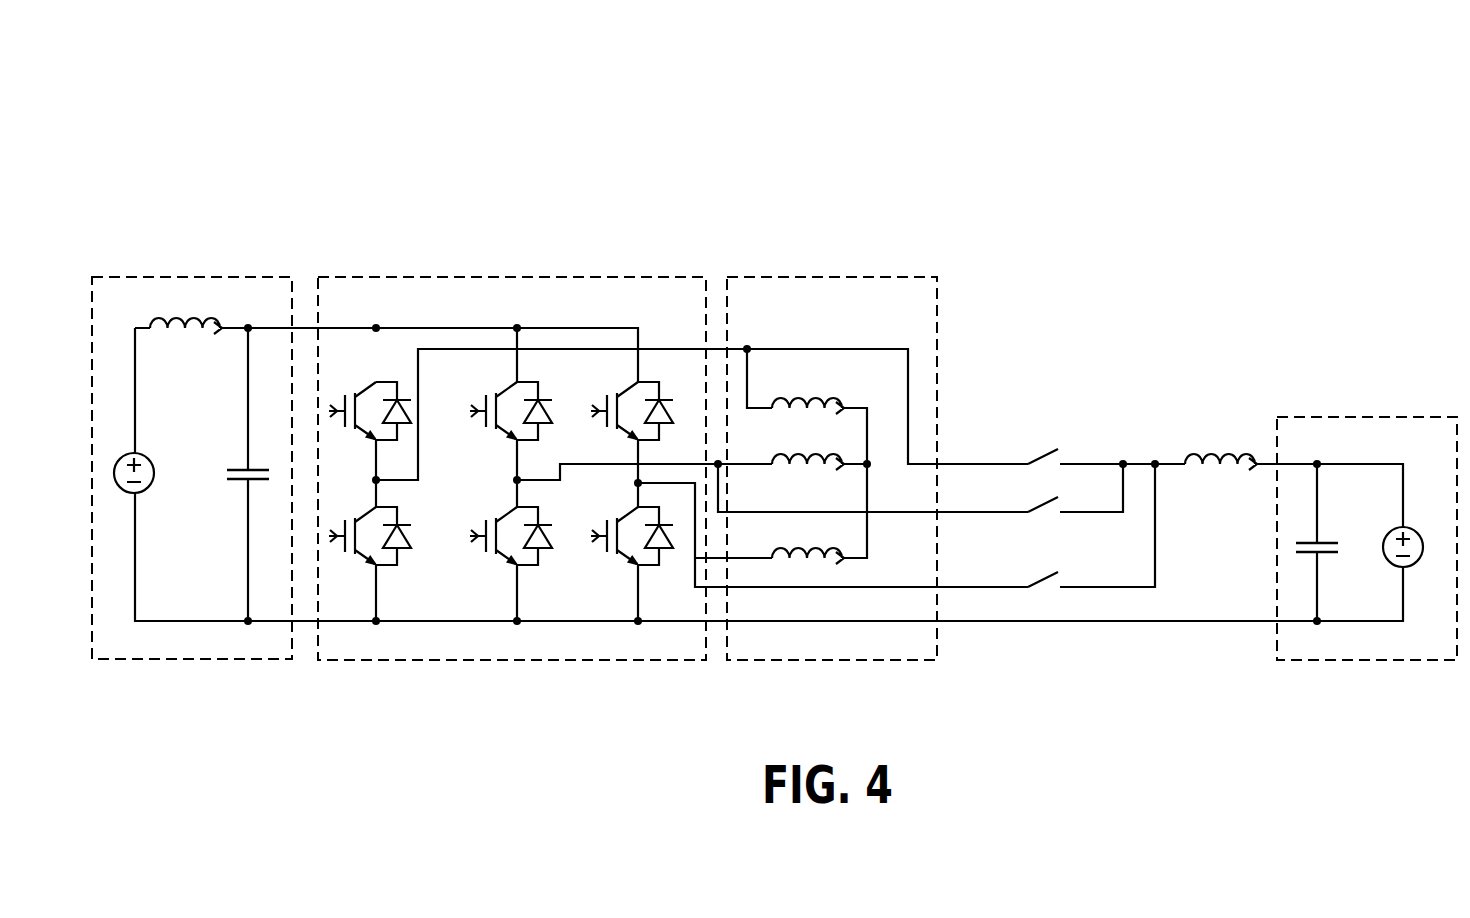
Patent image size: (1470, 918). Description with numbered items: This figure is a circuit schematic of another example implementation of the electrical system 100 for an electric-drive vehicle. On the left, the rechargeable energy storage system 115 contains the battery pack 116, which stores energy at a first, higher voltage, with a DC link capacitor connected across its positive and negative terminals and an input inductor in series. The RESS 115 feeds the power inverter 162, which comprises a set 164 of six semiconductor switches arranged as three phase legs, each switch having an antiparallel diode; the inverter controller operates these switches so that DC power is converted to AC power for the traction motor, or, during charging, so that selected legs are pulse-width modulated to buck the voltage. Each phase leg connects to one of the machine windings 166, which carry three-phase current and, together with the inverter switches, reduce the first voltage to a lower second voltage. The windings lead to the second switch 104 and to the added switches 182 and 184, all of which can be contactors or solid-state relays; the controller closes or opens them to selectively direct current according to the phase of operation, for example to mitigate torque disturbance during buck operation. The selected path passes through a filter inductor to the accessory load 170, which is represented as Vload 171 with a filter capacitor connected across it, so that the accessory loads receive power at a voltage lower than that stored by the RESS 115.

The electrical system 100 is at (990, 76).
The rechargeable energy storage system 115 is at (228, 277).
The battery pack 116 is at (150, 456).
The power inverter 162 is at (576, 255).
The set of semiconductor switches 164 is at (437, 277).
The machine windings 166 is at (848, 262).
The second switch 104 is at (1042, 451).
The switch 182 is at (1042, 501).
The switch 184 is at (1042, 576).
The accessory load 170 is at (1370, 410).
The Vload 171 is at (1410, 527).